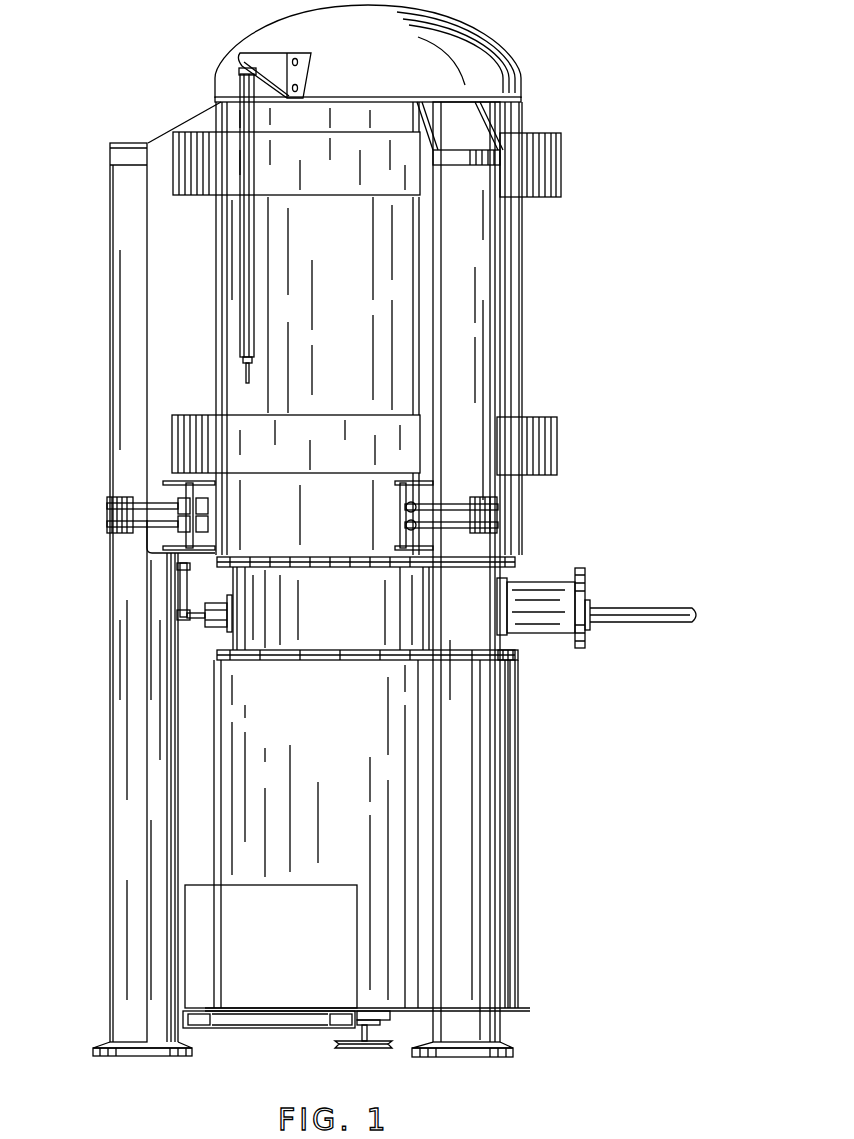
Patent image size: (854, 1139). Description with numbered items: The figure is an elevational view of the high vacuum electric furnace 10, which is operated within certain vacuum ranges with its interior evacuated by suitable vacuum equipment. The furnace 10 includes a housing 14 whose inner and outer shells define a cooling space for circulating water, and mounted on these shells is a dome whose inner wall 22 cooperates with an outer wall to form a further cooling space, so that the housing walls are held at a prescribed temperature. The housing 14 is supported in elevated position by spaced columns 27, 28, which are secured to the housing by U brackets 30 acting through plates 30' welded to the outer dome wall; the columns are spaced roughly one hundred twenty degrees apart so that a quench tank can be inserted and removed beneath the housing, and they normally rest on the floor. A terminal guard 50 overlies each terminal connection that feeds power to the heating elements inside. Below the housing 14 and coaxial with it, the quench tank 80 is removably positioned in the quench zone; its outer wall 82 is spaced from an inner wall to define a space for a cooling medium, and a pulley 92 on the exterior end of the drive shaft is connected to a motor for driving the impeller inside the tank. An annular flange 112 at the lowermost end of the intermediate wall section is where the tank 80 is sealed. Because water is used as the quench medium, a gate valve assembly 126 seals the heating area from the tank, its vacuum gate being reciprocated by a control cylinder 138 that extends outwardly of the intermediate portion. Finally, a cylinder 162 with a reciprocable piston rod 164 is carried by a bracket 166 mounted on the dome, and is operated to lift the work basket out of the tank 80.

The high vacuum electric furnace 10 is at (552, 104).
The housing 14 is at (522, 303).
The inner wall of dome 22 is at (455, 52).
The column 27 is at (475, 763).
The column 28 is at (133, 325).
The U bracket 30 is at (302, 524).
The plate 30' is at (247, 328).
The terminal guard 50 is at (540, 176).
The quench tank 80 is at (515, 873).
The outer wall of quench tank 82 is at (510, 822).
The pulley 92 is at (345, 1046).
The annular flange 112 is at (512, 652).
The gate valve assembly 126 is at (578, 584).
The control cylinder 138 is at (650, 612).
The cylinder 162 is at (254, 251).
The piston rod 164 is at (255, 377).
The bracket 166 is at (270, 62).